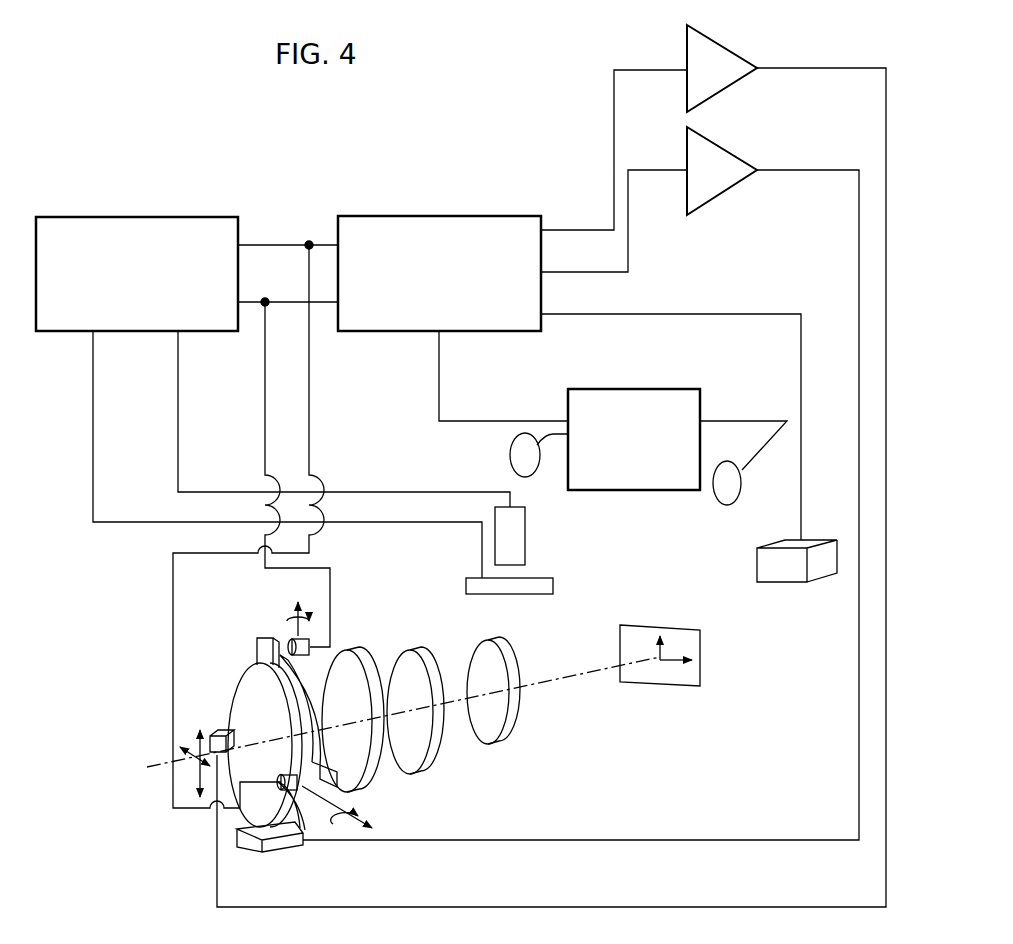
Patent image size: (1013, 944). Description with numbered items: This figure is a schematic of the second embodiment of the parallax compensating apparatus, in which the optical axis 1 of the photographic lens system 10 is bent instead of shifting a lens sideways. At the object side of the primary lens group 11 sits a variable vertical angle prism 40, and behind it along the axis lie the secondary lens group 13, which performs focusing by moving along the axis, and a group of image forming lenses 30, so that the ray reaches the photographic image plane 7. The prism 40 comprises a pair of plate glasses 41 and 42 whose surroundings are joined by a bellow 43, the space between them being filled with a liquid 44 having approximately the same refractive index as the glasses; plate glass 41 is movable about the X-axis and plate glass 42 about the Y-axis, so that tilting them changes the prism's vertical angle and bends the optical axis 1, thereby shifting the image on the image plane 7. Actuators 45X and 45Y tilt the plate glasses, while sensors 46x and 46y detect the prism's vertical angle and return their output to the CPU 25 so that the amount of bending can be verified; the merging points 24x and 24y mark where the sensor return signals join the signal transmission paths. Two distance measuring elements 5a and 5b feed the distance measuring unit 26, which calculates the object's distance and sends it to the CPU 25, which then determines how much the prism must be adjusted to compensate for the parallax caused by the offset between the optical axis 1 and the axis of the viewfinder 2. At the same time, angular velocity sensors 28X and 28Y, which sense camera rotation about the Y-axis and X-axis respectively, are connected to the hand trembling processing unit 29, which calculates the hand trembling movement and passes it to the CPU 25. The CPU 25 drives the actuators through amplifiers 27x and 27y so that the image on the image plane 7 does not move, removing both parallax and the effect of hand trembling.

The camera body 1 is at (153, 768).
The viewfinder 2 is at (780, 578).
The distance measuring element 5a is at (512, 452).
The distance measuring element 5b is at (742, 487).
The image plane 7 is at (665, 686).
The photographic lens system 10 is at (420, 807).
The primary lens group 11 is at (367, 772).
The secondary lens group 13 is at (437, 748).
The merging point 24x is at (309, 245).
The merging point 24y is at (265, 302).
The CPU 25 is at (438, 217).
The distance measuring unit 26 is at (623, 490).
The amplifier 27x is at (728, 52).
The amplifier 27y is at (720, 195).
The angular velocity sensor 28X is at (514, 528).
The angular velocity sensor 28Y is at (533, 580).
The hand trembling processing unit 29 is at (152, 217).
The image forming lenses 30 is at (485, 655).
The variable vertical angle prism 40 is at (210, 655).
The plate glass 41 is at (246, 680).
The plate glass 42 is at (300, 800).
The bellow 43 is at (280, 655).
The liquid 44 is at (298, 680).
The actuator 45X is at (243, 852).
The actuator 45Y is at (221, 730).
The sensor 46x is at (310, 647).
The sensor 46y is at (288, 832).